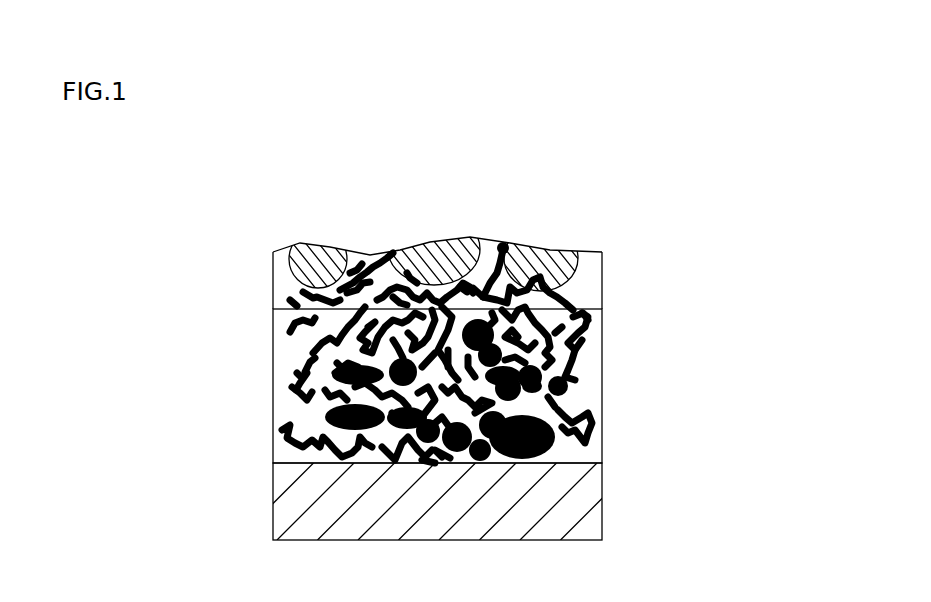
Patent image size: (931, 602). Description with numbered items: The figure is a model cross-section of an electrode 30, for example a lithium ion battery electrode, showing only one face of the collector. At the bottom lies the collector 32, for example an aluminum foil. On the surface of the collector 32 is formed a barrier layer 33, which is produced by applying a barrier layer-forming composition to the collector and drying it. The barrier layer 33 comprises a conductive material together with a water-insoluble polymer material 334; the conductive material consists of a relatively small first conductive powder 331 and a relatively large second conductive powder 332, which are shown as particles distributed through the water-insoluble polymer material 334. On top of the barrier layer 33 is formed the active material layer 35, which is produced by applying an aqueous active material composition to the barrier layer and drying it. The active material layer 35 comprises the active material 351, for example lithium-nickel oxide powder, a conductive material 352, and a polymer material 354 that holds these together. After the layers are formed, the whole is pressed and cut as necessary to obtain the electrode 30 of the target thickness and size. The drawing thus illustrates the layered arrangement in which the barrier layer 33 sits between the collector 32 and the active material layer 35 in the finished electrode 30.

The electrode 30 is at (672, 172).
The collector 32 is at (597, 522).
The barrier layer 33 is at (485, 386).
The active material layer 35 is at (459, 251).
The active material 351 is at (552, 250).
The conductive material 352 is at (369, 256).
The polymer material 354 is at (590, 282).
The first conductive powder 331 is at (590, 340).
The second conductive powder 332 is at (592, 455).
The water-insoluble polymer material 334 is at (592, 400).